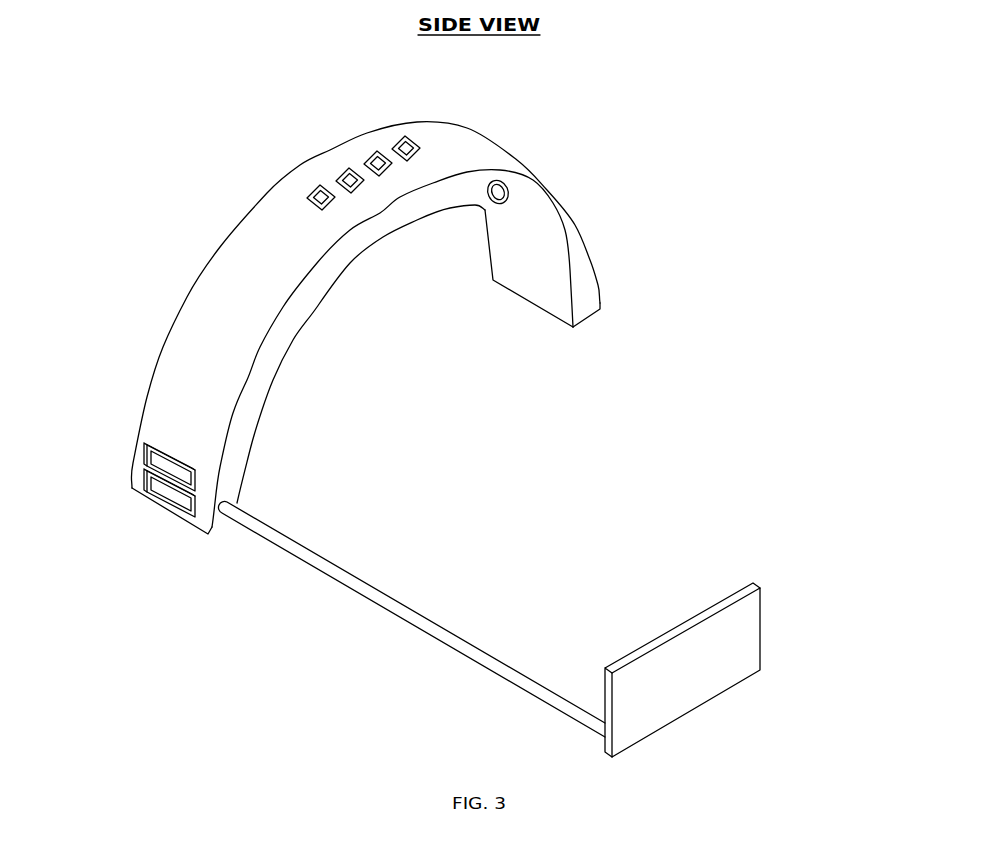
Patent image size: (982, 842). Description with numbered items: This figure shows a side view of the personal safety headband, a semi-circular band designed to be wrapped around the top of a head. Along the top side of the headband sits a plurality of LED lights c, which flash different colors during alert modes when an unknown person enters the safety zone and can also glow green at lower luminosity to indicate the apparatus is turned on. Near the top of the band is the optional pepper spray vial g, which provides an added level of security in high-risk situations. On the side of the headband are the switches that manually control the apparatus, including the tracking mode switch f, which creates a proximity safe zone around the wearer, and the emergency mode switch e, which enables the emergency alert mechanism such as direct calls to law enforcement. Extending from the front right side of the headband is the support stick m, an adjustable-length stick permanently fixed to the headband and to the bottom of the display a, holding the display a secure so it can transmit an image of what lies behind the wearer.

The display a is at (765, 633).
The plurality of LED lights c is at (405, 147).
The emergency mode switch e is at (162, 507).
The tracking mode switch f is at (150, 445).
The pepper spray vial g is at (487, 203).
The support stick m is at (390, 593).